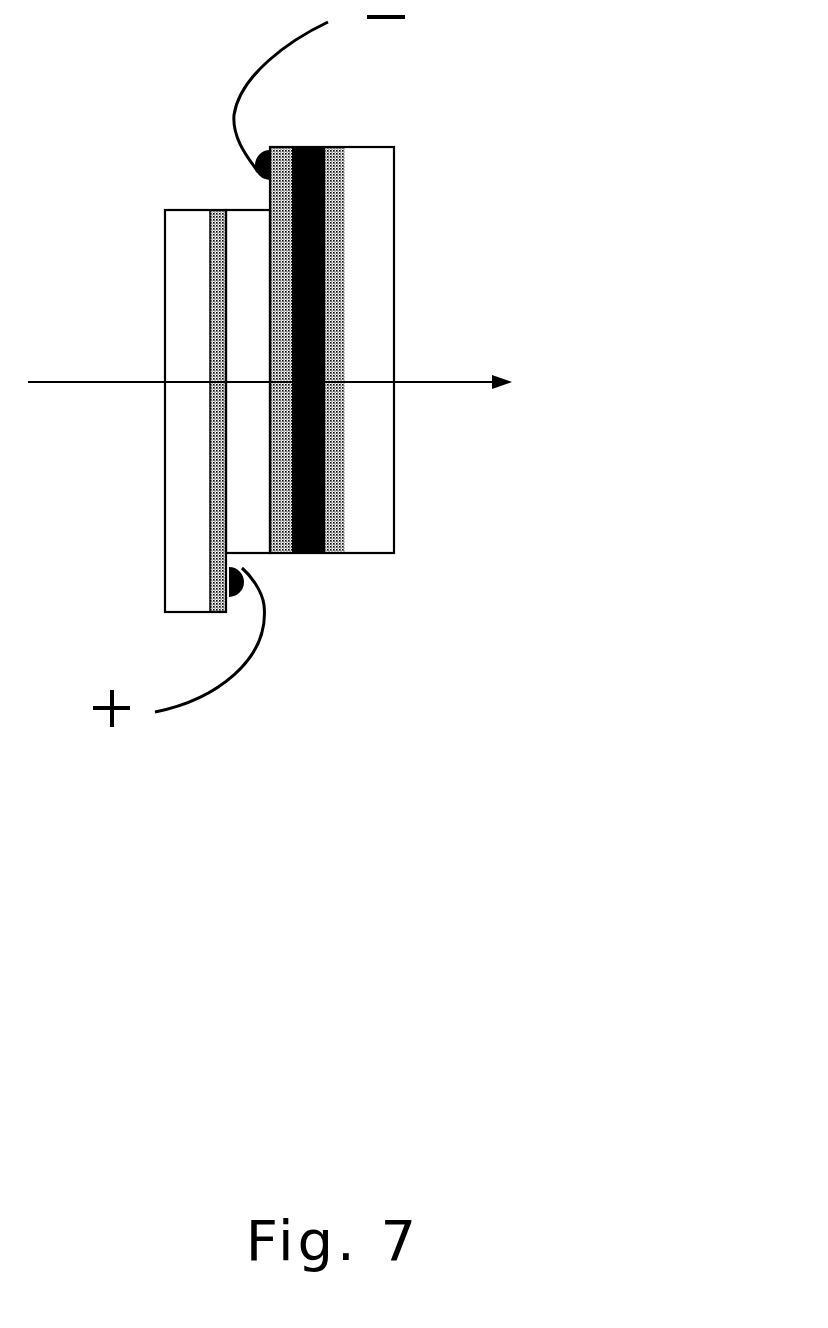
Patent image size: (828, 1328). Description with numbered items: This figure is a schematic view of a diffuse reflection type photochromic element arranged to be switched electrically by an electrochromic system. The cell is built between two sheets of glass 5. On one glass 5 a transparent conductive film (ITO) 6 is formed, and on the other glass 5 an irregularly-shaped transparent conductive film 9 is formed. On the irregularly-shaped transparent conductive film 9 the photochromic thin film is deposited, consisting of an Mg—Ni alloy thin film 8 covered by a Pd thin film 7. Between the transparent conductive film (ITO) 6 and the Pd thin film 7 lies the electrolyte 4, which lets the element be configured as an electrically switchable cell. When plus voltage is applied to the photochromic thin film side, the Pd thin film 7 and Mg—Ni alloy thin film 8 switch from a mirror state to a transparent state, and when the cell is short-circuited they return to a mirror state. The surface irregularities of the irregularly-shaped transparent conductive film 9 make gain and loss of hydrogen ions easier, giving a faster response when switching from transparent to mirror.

The electrolyte 4 is at (247, 319).
The glass 5 is at (279, 379).
The transparent conductive film (ITO) 6 is at (230, 626).
The Pd thin film 7 is at (286, 569).
The Mg—Ni alloy thin film 8 is at (315, 568).
The irregularly-shaped transparent conductive film 9 is at (354, 564).